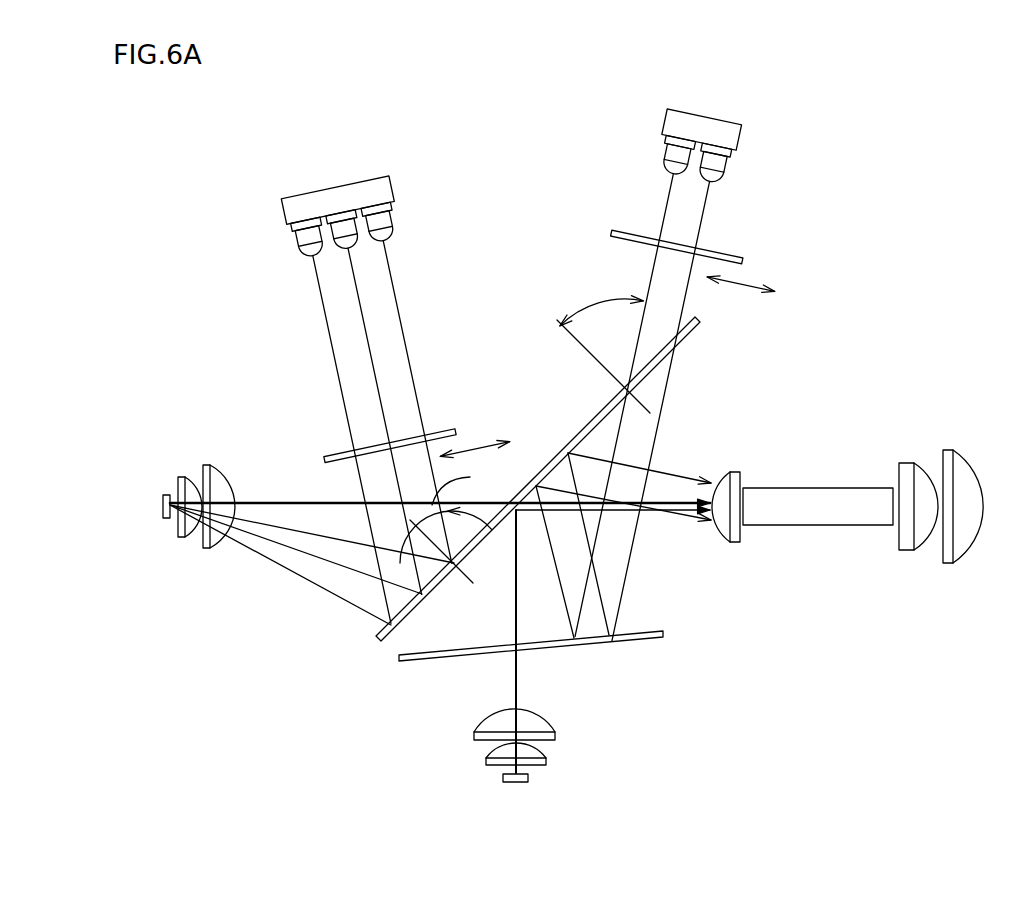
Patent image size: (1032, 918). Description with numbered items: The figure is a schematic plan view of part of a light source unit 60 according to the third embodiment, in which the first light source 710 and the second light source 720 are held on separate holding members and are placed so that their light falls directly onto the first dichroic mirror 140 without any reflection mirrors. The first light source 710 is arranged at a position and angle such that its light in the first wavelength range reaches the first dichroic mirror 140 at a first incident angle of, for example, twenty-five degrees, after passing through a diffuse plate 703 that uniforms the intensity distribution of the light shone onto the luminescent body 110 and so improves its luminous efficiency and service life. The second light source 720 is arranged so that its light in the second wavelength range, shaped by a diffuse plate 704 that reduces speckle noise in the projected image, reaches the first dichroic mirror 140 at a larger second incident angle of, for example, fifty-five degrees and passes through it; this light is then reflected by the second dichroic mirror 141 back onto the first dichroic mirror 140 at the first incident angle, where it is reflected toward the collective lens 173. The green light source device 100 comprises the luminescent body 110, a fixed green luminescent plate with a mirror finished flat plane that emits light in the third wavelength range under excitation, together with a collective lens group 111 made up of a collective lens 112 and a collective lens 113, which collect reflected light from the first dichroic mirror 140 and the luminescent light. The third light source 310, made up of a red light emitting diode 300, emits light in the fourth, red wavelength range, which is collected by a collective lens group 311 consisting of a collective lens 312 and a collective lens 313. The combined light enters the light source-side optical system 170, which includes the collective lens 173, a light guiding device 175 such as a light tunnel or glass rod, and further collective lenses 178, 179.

The light source unit 60 is at (913, 160).
The green light source device 100 is at (173, 487).
The luminescent body 110 is at (162, 517).
The collective lens group 111 is at (198, 540).
The collective lens 112 is at (223, 482).
The collective lens 113 is at (190, 477).
The first dichroic mirror 140 is at (695, 333).
The second dichroic mirror 141 is at (656, 643).
The light source-side optical system 170 is at (837, 547).
The collective lens 173 is at (735, 470).
The light guiding device 175 is at (810, 508).
The collective lens 178 is at (918, 465).
The collective lens 179 is at (970, 468).
The red light emitting diode 300 is at (508, 782).
The third light source 310 is at (537, 772).
The collective lens group 311 is at (482, 748).
The collective lens 312 is at (548, 722).
The collective lens 313 is at (540, 755).
The diffuse plate 703 is at (437, 432).
The diffuse plate 704 is at (727, 253).
The first light source 710 is at (400, 242).
The second light source 720 is at (650, 167).